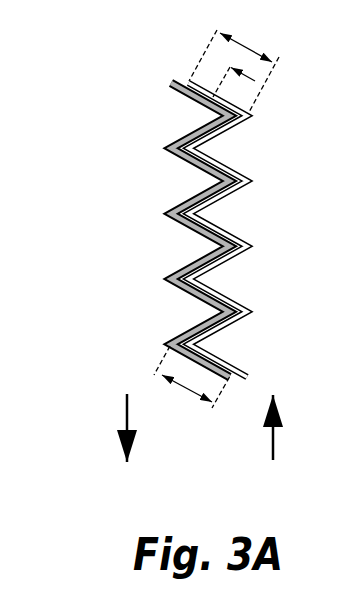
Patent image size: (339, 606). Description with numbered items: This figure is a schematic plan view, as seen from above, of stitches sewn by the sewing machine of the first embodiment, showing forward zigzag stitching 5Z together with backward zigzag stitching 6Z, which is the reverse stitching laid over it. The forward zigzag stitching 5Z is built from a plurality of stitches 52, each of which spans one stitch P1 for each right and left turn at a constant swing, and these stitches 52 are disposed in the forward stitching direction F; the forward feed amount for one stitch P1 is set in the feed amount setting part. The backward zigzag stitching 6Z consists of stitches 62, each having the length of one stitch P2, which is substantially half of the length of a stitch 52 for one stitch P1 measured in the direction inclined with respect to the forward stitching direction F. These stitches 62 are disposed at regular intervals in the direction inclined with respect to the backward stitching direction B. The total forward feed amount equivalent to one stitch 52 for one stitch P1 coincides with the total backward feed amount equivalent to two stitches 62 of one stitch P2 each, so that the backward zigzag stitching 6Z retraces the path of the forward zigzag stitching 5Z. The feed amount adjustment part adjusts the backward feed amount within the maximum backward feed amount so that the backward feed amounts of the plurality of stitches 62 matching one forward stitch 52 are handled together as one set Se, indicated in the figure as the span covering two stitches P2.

The forward zigzag stitching 5Z is at (167, 79).
The backward zigzag stitching 6Z is at (233, 231).
The stitch 52 is at (172, 157).
The stitch 62 is at (242, 120).
The one stitch P1 is at (192, 381).
The one stitch P2 is at (199, 52).
The set Se is at (247, 57).
The forward stitching direction F is at (127, 414).
The backward stitching direction B is at (274, 413).